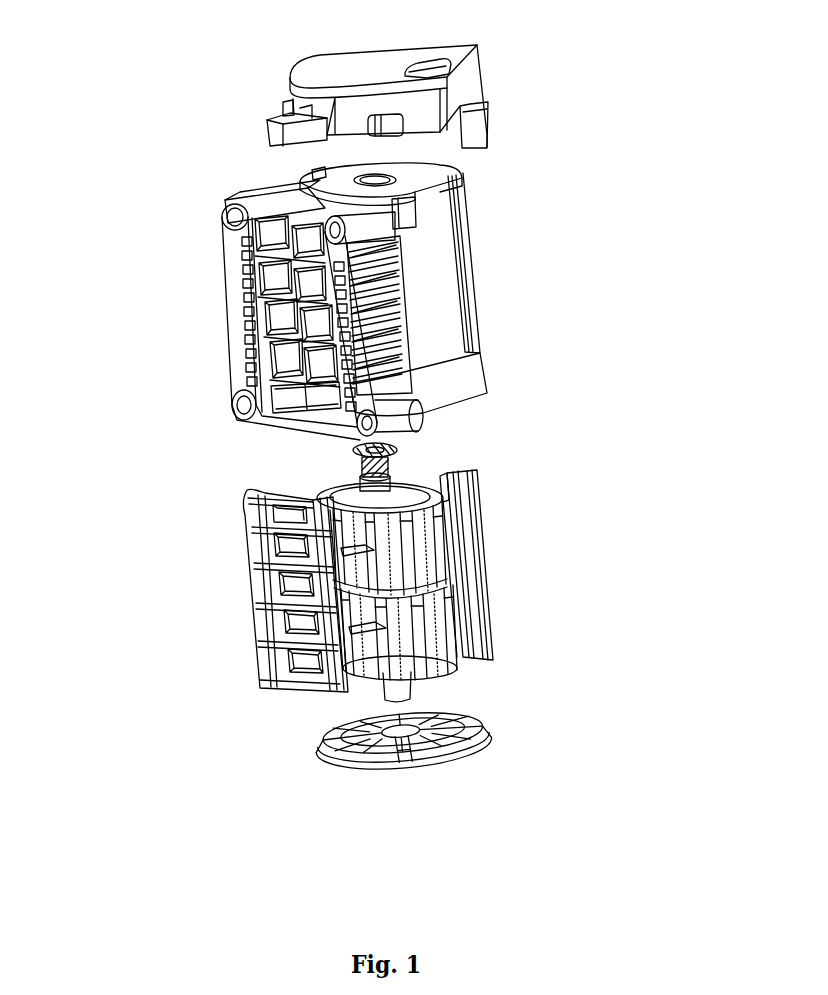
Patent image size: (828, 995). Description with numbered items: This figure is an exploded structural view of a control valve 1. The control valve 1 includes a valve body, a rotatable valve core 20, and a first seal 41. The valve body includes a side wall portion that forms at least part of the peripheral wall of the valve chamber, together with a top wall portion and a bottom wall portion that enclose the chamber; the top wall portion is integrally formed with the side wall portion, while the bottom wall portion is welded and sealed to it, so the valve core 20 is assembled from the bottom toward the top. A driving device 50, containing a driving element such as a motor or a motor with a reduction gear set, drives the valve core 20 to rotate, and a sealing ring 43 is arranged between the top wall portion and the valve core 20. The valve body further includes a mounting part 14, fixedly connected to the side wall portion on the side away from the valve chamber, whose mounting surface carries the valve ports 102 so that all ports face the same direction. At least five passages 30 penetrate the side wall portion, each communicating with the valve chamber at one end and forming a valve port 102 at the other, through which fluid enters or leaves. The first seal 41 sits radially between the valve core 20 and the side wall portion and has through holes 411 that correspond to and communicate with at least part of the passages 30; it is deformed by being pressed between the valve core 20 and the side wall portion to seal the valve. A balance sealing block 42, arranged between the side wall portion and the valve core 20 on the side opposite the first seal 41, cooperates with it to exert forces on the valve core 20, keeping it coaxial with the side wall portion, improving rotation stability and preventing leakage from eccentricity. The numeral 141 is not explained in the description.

The control valve 1 is at (166, 31).
The driving device 50 is at (300, 120).
The mounting part 14 is at (262, 200).
The corner post 141 is at (248, 219).
The passages 30 is at (285, 242).
The valve port 102 is at (265, 283).
The sealing ring 43 is at (396, 442).
The first seal 41 is at (248, 494).
The balance sealing block 42 is at (478, 502).
The valve core 20 is at (450, 580).
The through holes 411 is at (297, 583).